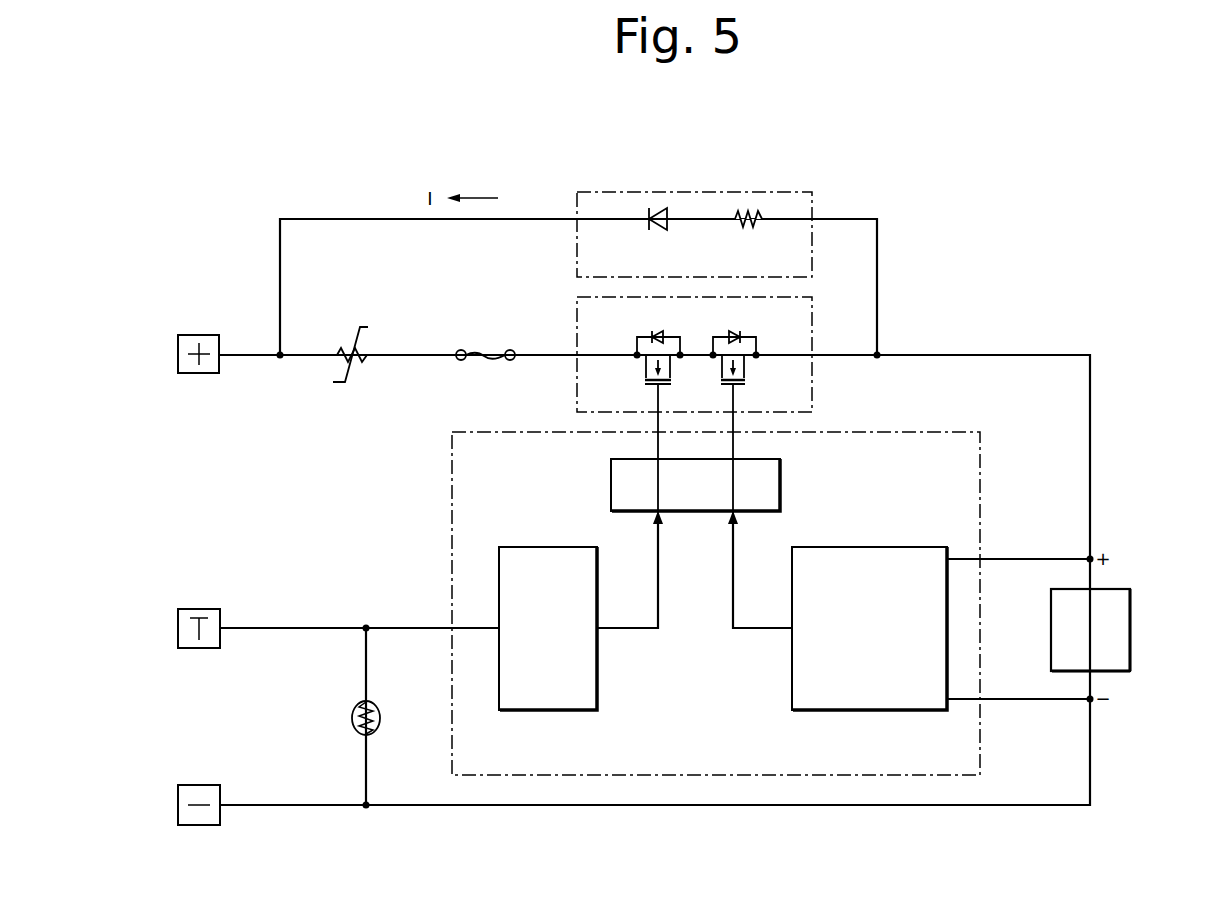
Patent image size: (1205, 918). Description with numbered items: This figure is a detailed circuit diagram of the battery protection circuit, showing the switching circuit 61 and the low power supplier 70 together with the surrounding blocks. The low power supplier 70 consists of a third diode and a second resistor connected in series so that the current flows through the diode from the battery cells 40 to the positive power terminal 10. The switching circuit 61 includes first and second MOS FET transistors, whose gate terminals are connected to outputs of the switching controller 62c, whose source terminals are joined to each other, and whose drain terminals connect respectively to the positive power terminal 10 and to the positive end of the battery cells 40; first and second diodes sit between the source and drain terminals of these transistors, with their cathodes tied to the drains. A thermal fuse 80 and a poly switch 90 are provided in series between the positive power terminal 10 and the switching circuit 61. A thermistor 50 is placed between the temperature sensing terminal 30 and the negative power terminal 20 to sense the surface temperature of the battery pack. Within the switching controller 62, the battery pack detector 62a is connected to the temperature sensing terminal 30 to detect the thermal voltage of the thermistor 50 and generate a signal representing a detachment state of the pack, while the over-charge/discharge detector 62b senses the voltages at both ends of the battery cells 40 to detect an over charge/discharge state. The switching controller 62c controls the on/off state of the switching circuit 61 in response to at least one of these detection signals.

The positive power terminal 10 is at (178, 356).
The negative power terminal 20 is at (178, 805).
The temperature sensing terminal 30 is at (186, 609).
The battery cells 40 is at (1130, 625).
The thermistor 50 is at (352, 716).
The switching circuit 61 is at (812, 388).
The switching controller 62 is at (980, 450).
The battery pack detector 62a is at (561, 711).
The over-charge/discharge detector 62b is at (851, 711).
The switching controller 62c is at (781, 494).
The low power supplier 70 is at (812, 194).
The thermal fuse 80 is at (478, 352).
The poly switch 90 is at (362, 345).